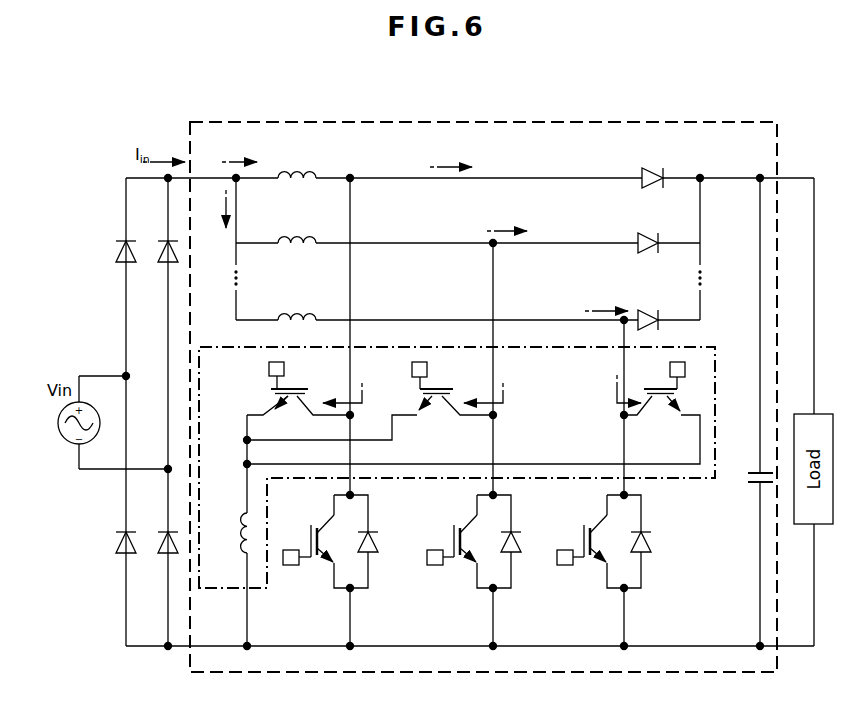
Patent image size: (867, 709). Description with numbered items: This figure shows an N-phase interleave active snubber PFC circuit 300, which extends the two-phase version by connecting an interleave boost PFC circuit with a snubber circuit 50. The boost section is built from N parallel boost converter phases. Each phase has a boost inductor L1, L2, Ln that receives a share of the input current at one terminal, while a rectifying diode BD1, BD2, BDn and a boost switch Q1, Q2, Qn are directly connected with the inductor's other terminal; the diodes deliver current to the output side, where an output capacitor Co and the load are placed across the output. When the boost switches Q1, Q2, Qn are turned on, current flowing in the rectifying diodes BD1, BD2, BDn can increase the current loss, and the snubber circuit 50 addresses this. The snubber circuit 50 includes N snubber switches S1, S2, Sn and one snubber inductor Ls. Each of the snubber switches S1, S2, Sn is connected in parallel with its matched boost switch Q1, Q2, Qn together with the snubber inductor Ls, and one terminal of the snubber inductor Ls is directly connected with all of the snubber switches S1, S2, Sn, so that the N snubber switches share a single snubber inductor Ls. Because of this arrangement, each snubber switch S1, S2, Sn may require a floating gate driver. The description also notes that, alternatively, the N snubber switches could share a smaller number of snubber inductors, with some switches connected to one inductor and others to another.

The interleave active snubber PFC circuit 300 is at (507, 122).
The snubber circuit 50 is at (213, 588).
The boost inductor L1 is at (296, 162).
The boost inductor L2 is at (296, 227).
The boost inductor Ln is at (296, 305).
The rectifying diode BD1 is at (653, 166).
The rectifying diode BD2 is at (648, 232).
The rectifying diode BDn is at (650, 309).
The snubber switch S1 is at (298, 388).
The snubber switch S2 is at (452, 388).
The snubber switch Sn is at (654, 388).
The boost switch Q1 is at (330, 542).
The boost switch Q2 is at (473, 542).
The boost switch Qn is at (602, 542).
The snubber inductor Ls is at (230, 530).
The output capacitor Co is at (749, 478).